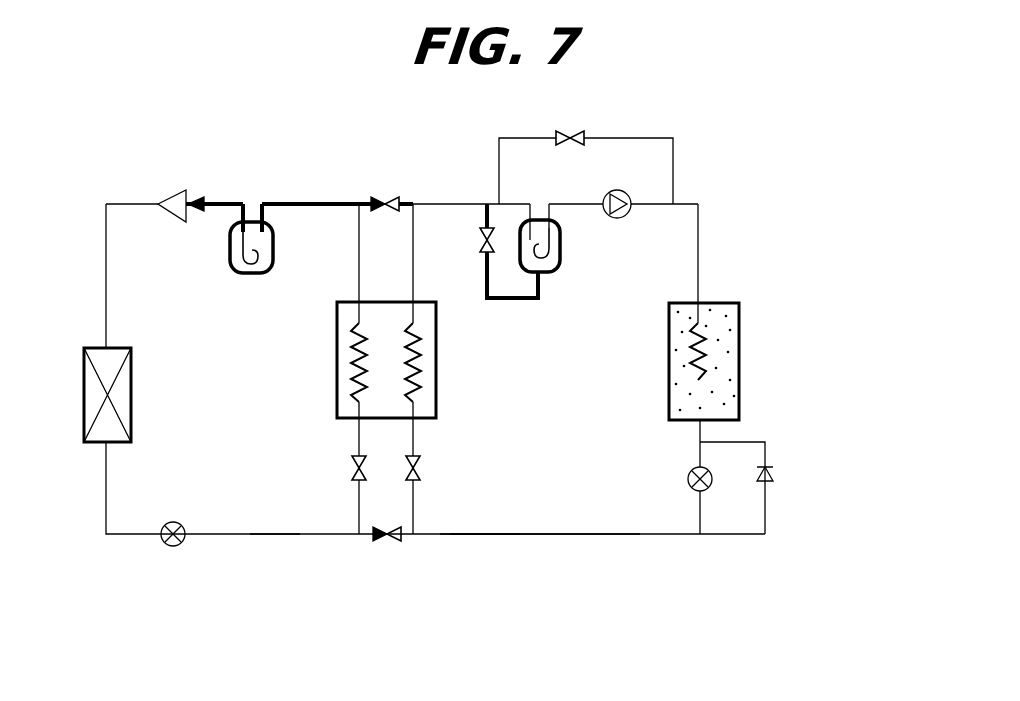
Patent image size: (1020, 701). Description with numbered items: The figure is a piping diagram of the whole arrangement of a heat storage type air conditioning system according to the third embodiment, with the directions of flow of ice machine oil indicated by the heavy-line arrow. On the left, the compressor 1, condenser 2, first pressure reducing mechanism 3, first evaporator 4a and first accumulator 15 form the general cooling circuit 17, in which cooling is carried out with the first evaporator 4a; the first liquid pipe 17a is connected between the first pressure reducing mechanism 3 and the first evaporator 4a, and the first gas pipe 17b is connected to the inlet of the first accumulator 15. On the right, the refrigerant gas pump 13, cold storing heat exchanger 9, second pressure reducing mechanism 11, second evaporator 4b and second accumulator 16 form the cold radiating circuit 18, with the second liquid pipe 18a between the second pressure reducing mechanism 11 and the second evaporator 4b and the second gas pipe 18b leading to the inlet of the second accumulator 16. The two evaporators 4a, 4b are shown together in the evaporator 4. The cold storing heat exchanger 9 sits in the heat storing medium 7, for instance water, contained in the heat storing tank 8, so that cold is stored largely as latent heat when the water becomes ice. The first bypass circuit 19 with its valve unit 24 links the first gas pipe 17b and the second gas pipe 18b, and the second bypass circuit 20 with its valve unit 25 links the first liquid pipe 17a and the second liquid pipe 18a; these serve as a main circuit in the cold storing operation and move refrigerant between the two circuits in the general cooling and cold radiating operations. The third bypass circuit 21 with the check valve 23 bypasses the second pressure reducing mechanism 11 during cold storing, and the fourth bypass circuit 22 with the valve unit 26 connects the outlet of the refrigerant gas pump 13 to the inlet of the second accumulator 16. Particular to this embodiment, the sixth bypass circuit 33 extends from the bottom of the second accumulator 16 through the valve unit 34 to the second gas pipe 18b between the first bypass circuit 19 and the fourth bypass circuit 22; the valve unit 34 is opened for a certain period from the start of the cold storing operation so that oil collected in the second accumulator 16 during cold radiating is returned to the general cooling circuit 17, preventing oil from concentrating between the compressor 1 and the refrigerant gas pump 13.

The compressor 1 is at (168, 192).
The condenser 2 is at (132, 380).
The first pressure reducing mechanism 3 is at (164, 546).
The evaporator 4 is at (387, 369).
The first evaporator 4a is at (343, 398).
The second evaporator 4b is at (428, 378).
The heat storing medium 7 is at (739, 332).
The heat storing tank 8 is at (739, 396).
The cold storing heat exchanger 9 is at (690, 360).
The second pressure reducing mechanism 11 is at (688, 476).
The refrigerant gas pump 13 is at (626, 214).
The first accumulator 15 is at (232, 268).
The second accumulator 16 is at (562, 258).
The general cooling circuit 17 is at (240, 536).
The first liquid pipe 17a is at (272, 530).
The first gas pipe 17b is at (324, 208).
The cold radiating circuit 18 is at (510, 536).
The second liquid pipe 18a is at (484, 530).
The second gas pipe 18b is at (428, 208).
The first bypass circuit 19 is at (392, 198).
The second bypass circuit 20 is at (392, 540).
The third bypass circuit 21 is at (767, 518).
The fourth bypass circuit 22 is at (676, 168).
The check valve 23 is at (773, 474).
The valve unit 24 is at (378, 198).
The valve unit 25 is at (385, 540).
The valve unit 26 is at (570, 130).
The sixth bypass circuit 33 is at (503, 300).
The valve unit 34 is at (480, 246).